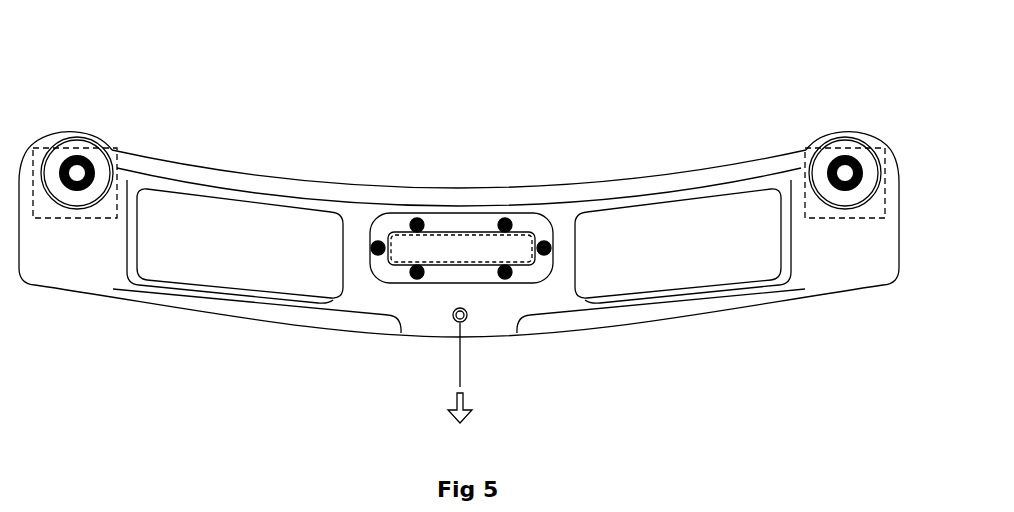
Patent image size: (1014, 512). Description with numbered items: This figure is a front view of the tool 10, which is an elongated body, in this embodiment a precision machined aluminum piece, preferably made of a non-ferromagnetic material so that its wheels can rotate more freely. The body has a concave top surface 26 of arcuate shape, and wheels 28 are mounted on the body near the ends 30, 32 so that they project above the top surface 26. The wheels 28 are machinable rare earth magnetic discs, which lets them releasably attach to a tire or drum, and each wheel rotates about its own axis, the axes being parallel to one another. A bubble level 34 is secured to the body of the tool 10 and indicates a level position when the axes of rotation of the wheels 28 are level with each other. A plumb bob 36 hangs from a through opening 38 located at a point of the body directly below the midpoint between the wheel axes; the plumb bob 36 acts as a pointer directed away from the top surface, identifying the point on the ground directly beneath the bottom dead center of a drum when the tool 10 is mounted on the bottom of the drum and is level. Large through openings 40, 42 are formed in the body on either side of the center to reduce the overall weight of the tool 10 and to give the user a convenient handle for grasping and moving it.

The tool 10 is at (388, 115).
The concave top surface 26 is at (258, 175).
The wheels 28 is at (80, 154).
The end 30 is at (895, 163).
The end 32 is at (22, 160).
The bubble level 34 is at (458, 245).
The plumb bob 36 is at (460, 387).
The through opening 38 is at (455, 316).
The large through opening 40 is at (277, 295).
The large through opening 42 is at (683, 288).